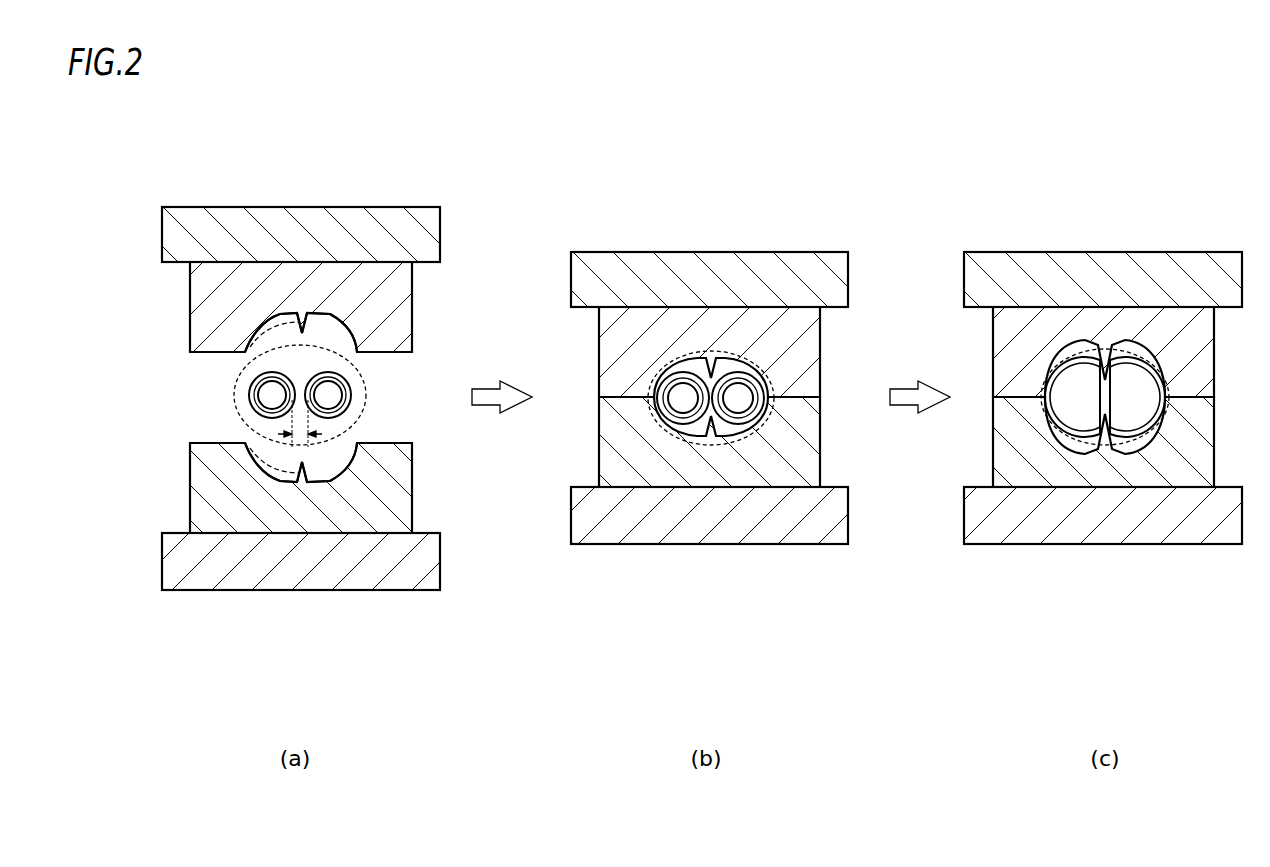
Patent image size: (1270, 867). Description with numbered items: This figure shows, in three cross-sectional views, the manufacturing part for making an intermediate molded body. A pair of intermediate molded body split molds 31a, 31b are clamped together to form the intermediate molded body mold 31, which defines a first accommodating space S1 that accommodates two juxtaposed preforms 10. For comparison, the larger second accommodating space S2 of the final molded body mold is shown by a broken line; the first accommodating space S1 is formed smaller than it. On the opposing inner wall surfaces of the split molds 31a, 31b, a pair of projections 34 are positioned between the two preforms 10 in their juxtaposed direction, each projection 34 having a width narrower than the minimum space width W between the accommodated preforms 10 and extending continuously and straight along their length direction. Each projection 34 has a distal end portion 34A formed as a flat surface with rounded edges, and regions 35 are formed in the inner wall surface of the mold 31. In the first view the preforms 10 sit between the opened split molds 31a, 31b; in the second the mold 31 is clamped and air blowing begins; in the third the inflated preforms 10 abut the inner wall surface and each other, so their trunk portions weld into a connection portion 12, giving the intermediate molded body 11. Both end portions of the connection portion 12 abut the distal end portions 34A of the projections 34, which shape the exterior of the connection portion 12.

The preform 10 is at (250, 391).
The intermediate molded body 11 is at (1168, 380).
The connection portion 12 is at (1168, 420).
The intermediate molded body mold 31 is at (612, 386).
The intermediate molded body split mold 31a is at (205, 301).
The intermediate molded body split mold 31b is at (205, 487).
The projection 34 is at (300, 318).
The distal end portion 34A is at (353, 346).
The region 35 is at (308, 313).
The first accommodating space S1 is at (250, 347).
The second accommodating space S2 is at (366, 372).
The minimum space width W is at (300, 431).